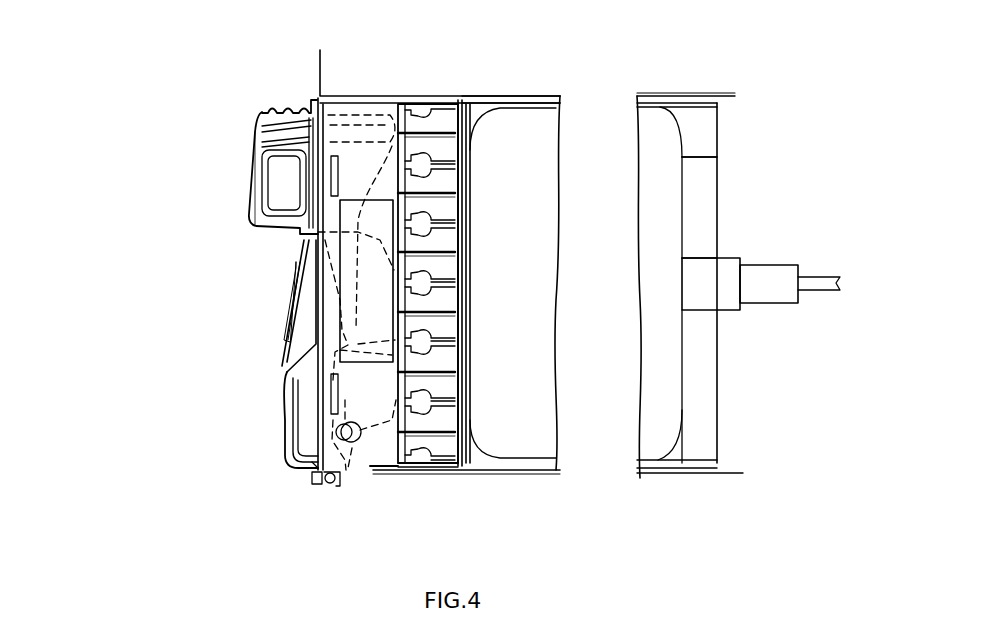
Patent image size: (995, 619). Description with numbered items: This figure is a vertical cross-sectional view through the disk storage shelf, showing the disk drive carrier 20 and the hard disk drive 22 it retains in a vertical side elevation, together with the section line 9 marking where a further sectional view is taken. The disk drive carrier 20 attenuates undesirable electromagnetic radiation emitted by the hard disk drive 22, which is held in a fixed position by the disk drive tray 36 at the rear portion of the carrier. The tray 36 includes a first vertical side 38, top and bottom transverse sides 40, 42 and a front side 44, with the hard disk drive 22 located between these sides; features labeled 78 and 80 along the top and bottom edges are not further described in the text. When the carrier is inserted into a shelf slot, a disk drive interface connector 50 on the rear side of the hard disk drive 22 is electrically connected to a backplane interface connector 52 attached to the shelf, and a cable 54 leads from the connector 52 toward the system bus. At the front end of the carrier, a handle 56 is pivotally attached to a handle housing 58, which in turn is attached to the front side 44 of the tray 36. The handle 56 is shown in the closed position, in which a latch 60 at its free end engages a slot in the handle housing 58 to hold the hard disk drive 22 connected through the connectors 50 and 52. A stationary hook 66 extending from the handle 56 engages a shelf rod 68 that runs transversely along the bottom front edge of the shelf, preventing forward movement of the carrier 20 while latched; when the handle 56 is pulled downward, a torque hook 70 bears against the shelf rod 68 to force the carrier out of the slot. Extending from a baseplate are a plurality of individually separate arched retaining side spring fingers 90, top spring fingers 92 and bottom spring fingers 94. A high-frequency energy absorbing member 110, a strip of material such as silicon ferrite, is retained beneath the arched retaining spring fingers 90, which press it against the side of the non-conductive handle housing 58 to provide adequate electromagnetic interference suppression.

The disk drive carrier 20 is at (178, 96).
The handle 56 is at (266, 110).
The latch 60 is at (336, 96).
The handle housing 58 is at (380, 98).
The top spring fingers 92 is at (416, 100).
The retaining side spring fingers 90 is at (443, 118).
The high-frequency energy absorbing member 110 is at (420, 216).
The front side 44 is at (466, 102).
The top rail 78 is at (516, 96).
The top transverse side 40 is at (544, 102).
The first vertical side 38 is at (706, 122).
The disk drive tray 36 is at (712, 178).
The disk drive interface connector 50 is at (726, 256).
The backplane interface connector 52 is at (788, 264).
The cable 54 is at (828, 276).
The torque hook 70 is at (318, 462).
The shelf rod 68 is at (330, 490).
The stationary hook 66 is at (345, 488).
The bottom spring fingers 94 is at (415, 476).
The hard disk drive 22 is at (505, 470).
The bottom rail 80 is at (467, 474).
The bottom transverse side 42 is at (544, 474).
The section line 9- 9 is at (515, 378).